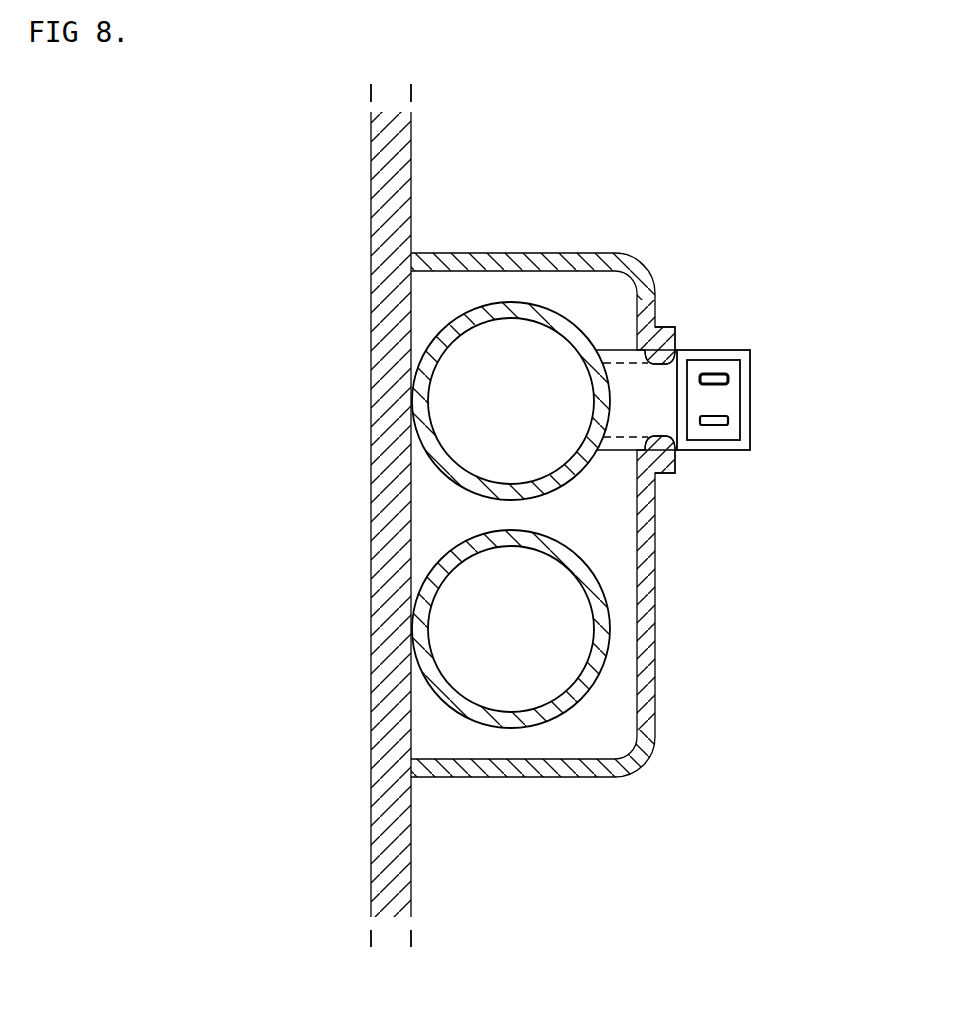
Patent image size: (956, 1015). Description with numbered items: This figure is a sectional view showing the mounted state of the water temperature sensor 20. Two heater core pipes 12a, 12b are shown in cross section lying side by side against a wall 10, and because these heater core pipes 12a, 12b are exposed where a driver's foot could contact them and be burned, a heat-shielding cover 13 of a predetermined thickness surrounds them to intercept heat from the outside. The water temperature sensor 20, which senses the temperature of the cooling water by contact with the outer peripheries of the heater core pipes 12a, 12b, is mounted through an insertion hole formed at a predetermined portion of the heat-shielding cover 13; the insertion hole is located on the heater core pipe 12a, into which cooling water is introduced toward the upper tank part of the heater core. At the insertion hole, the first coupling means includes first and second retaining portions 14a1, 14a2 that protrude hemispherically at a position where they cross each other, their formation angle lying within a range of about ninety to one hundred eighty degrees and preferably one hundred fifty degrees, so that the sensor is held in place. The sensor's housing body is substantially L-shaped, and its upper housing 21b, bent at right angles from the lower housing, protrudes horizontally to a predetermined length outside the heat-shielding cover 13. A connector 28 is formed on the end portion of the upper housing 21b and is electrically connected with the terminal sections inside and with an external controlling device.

The wall 10 is at (411, 830).
The heater core pipe 12a is at (526, 308).
The heater core pipe 12b is at (600, 668).
The heat-shielding cover 13 is at (657, 582).
The first retaining portion 14a1 is at (673, 327).
The second retaining portion 14a2 is at (660, 471).
The water temperature sensor 20 is at (775, 433).
The upper housing 21b is at (752, 408).
The connector 28 is at (732, 367).